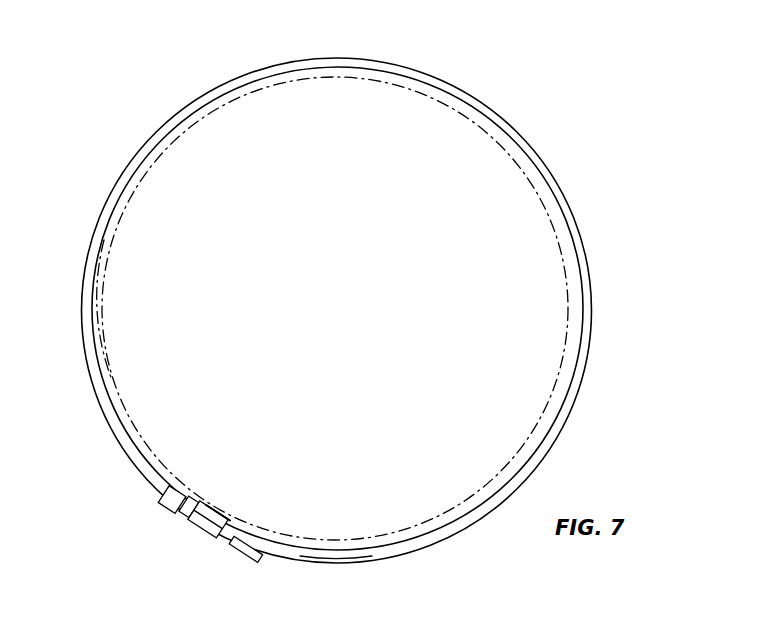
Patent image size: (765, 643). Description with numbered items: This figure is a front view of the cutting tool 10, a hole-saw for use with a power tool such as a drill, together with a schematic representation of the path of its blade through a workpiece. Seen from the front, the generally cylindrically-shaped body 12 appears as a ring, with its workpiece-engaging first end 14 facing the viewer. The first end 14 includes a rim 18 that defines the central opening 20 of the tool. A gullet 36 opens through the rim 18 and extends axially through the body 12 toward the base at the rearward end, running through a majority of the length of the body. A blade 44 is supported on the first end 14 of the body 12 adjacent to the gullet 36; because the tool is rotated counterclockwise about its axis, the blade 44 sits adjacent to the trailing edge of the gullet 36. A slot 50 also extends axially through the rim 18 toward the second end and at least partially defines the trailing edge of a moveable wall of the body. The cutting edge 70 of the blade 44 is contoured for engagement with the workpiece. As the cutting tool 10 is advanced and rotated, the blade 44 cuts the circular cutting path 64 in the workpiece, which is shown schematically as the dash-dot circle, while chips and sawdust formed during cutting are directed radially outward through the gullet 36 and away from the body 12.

The cutting tool 10 is at (102, 82).
The body 12 is at (583, 247).
The first end 14 is at (580, 366).
The rim 18 is at (405, 547).
The opening 20 is at (323, 548).
The gullet 36 is at (240, 555).
The blade 44 is at (198, 515).
The slot 50 is at (180, 488).
The circular cutting path 64 is at (118, 394).
The cutting edge 70 is at (232, 522).